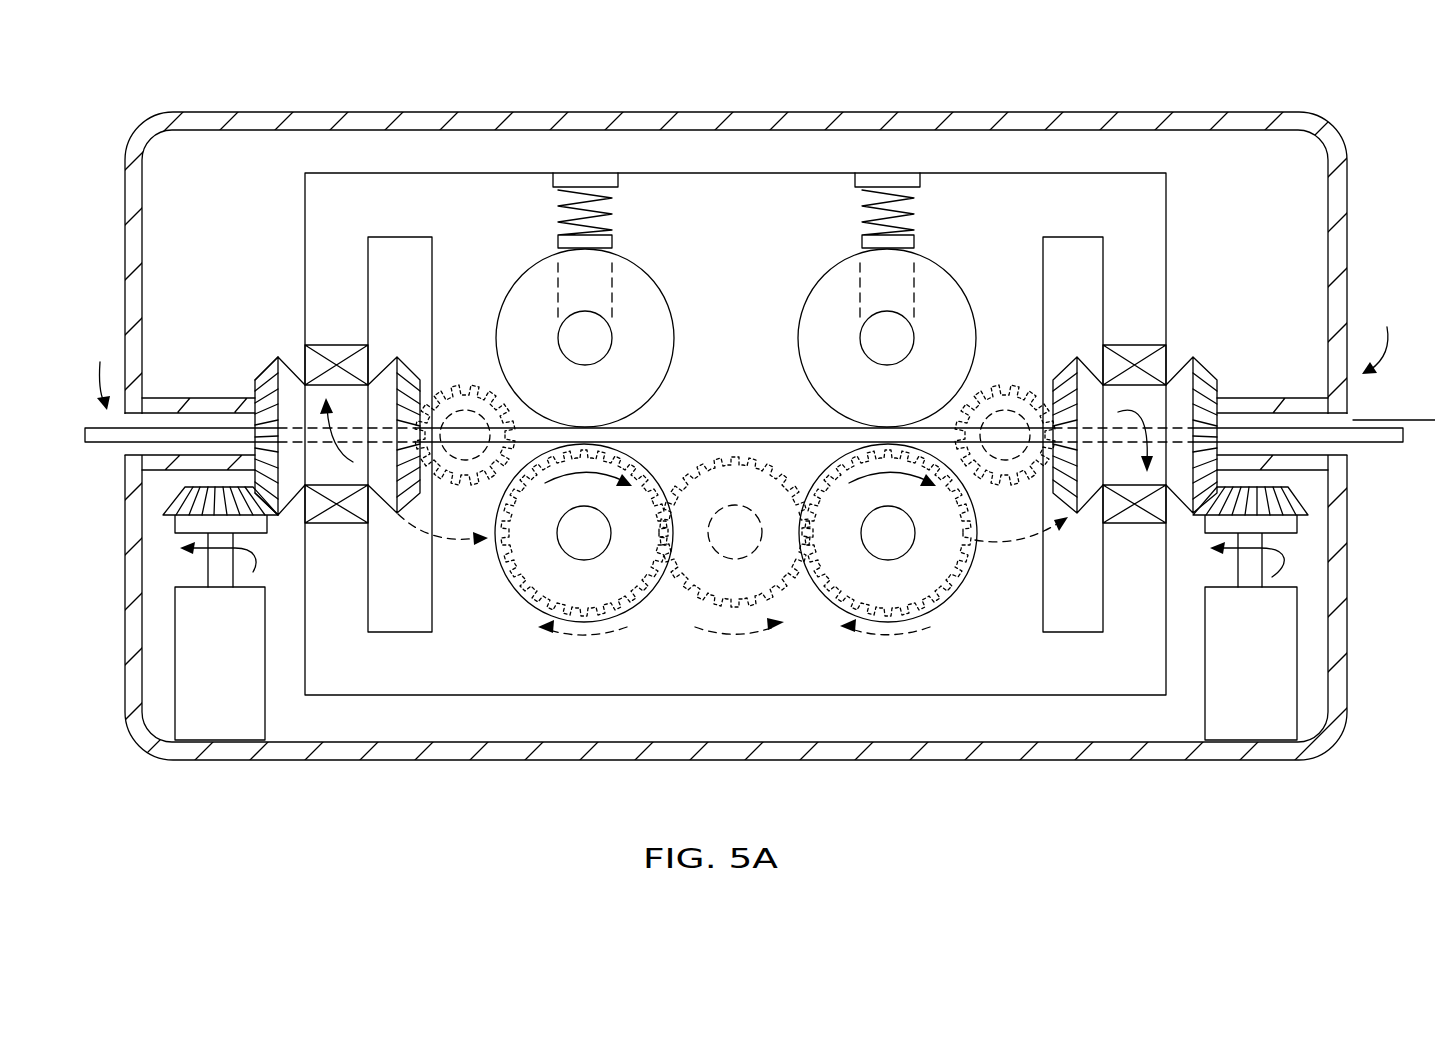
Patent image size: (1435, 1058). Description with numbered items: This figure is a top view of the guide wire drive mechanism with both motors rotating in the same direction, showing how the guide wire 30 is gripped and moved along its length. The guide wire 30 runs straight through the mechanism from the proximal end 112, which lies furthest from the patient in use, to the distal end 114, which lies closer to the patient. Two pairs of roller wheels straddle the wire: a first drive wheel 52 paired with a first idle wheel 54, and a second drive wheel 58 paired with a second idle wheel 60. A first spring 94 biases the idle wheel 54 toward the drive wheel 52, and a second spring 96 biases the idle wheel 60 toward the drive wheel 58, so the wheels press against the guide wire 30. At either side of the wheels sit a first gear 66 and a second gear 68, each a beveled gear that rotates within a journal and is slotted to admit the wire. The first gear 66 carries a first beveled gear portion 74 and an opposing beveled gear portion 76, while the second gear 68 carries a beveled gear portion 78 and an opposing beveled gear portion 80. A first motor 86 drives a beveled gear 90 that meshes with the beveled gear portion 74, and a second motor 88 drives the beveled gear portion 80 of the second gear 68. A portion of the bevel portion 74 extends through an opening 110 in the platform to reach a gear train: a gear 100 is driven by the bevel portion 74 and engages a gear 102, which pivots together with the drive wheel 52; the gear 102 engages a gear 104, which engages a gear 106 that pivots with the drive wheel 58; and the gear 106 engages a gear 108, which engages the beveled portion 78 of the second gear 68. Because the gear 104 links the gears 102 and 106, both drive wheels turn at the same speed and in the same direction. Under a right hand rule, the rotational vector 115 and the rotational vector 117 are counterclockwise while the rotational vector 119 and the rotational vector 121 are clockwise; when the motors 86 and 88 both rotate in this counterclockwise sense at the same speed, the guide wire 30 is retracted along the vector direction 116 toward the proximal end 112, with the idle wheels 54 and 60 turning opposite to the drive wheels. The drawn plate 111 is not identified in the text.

The guide wire 30 is at (110, 450).
The drive wheel 52 is at (953, 600).
The idle wheel 54 is at (937, 277).
The drive wheel 58 is at (520, 600).
The idle wheel 60 is at (644, 281).
The first gear 66 is at (1152, 392).
The second gear 68 is at (340, 392).
The first beveled gear portion 74 is at (1206, 380).
The opposing beveled gear portion 76 is at (1070, 368).
The beveled gear portion 78 is at (418, 345).
The opposing beveled gear portion 80 is at (268, 380).
The first motor 86 is at (1257, 738).
The second motor 88 is at (222, 738).
The gear 90 is at (1287, 503).
The first spring 94 is at (862, 206).
The second spring 96 is at (610, 210).
The first gear of gear train 100 is at (1006, 356).
The gear 102 is at (843, 600).
The gear 104 is at (727, 453).
The gear 106 is at (632, 598).
The gear 108 is at (468, 508).
The opening 110 is at (1073, 237).
The support plate 111 is at (401, 243).
The proximal end 112 is at (1386, 336).
The distal end 114 is at (99, 372).
The rotational vector 115 is at (1272, 577).
The vector direction 116 is at (1400, 419).
The rotational vector 117 is at (1150, 445).
The rotational vector 119 is at (337, 470).
The rotational vector 121 is at (737, 635).